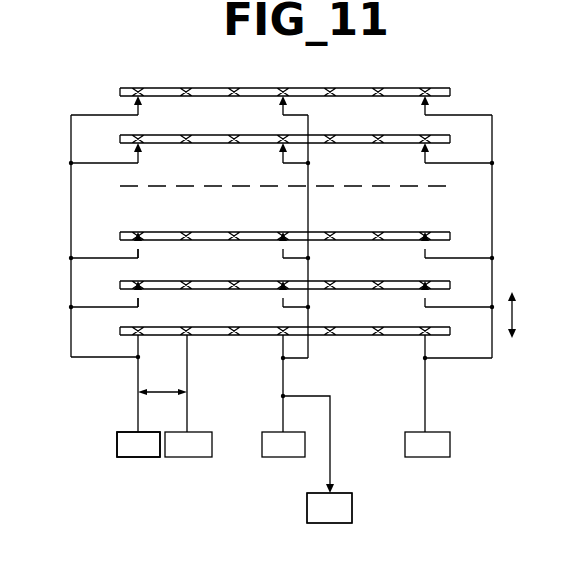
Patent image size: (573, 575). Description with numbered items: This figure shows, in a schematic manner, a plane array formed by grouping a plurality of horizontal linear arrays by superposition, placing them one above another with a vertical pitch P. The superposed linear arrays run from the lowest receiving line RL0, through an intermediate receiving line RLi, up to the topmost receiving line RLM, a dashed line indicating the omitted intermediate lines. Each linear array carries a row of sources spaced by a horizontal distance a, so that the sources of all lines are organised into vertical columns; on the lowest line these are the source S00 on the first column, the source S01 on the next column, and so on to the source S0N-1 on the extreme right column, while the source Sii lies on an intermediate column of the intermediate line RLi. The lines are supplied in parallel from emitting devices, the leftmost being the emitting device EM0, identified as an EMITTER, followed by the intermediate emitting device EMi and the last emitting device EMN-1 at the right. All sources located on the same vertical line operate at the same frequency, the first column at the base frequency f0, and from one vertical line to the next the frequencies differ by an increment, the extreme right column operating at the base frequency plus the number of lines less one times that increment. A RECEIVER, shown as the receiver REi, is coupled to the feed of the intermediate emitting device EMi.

The receiving line M RLM is at (368, 64).
The source i,i Sii is at (283, 231).
The receiving line i RLi is at (357, 232).
The source 0,1 S01 is at (160, 256).
The source 0,0 S00 is at (160, 304).
The receiving line 0 RL0 is at (364, 304).
The source 0,(N-1) S0N-1 is at (391, 383).
The pitch between linear arrays P is at (521, 315).
The source spacing a is at (162, 380).
The emitting device EMITTER is at (127, 432).
The emitting device 0 EM0 is at (117, 450).
The base frequency f0 is at (138, 462).
The emitting device i EMi is at (265, 447).
The emitting device N-1 EMN-1 is at (407, 447).
The receiver RECEIVER is at (352, 508).
The receiver i REi is at (311, 512).